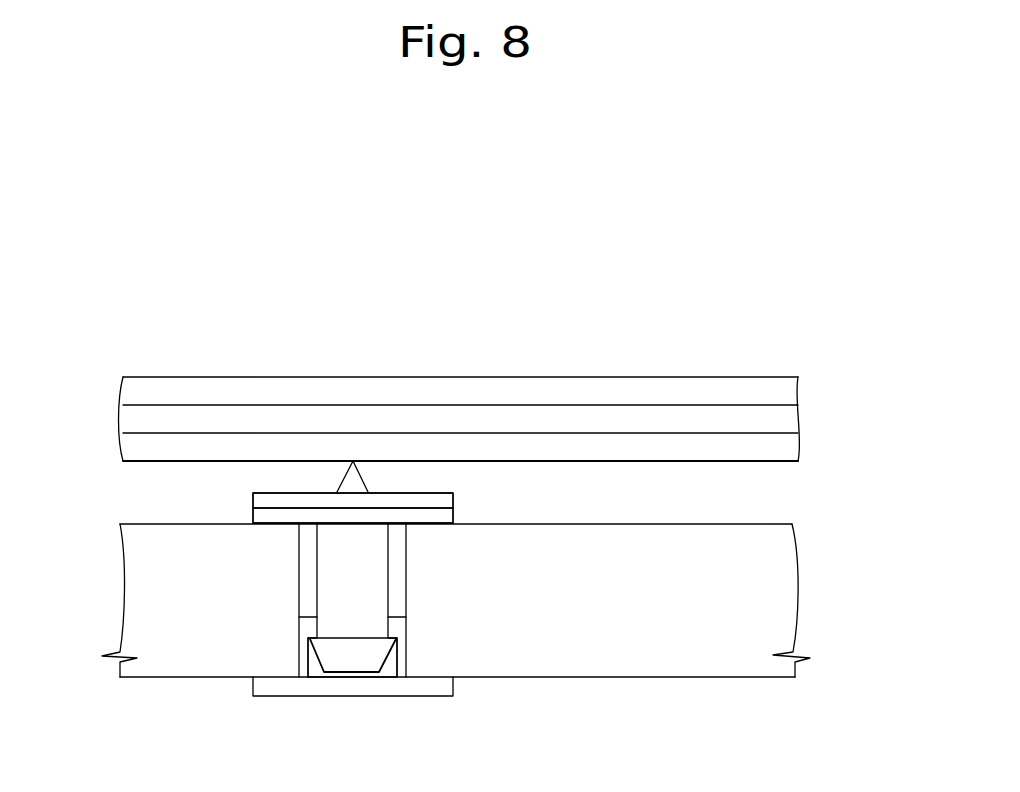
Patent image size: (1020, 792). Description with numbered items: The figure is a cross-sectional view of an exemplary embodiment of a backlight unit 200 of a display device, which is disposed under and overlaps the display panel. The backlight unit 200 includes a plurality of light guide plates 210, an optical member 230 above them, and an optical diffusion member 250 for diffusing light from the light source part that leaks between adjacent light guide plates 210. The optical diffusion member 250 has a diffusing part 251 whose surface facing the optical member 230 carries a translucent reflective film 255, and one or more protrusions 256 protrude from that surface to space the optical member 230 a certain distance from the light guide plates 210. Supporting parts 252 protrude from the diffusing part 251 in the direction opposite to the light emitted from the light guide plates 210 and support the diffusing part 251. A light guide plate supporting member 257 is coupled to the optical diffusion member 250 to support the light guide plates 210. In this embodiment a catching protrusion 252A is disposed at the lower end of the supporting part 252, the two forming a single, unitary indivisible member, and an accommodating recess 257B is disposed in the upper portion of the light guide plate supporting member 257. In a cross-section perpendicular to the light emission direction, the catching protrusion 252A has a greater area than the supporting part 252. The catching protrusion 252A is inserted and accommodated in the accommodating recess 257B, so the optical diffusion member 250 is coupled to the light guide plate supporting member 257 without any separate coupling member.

The backlight unit 200 is at (686, 302).
The light guide plate 210 is at (137, 608).
The optical member 230 is at (136, 422).
The optical diffusion member 250 is at (453, 503).
The diffusing part 251 is at (263, 517).
The reflective film 255 is at (263, 500).
The protrusion 256 is at (356, 478).
The supporting part 252 is at (330, 581).
The catching protrusion 252A is at (338, 662).
The light guide plate supporting member 257 is at (436, 689).
The accommodating recess 257B is at (388, 672).